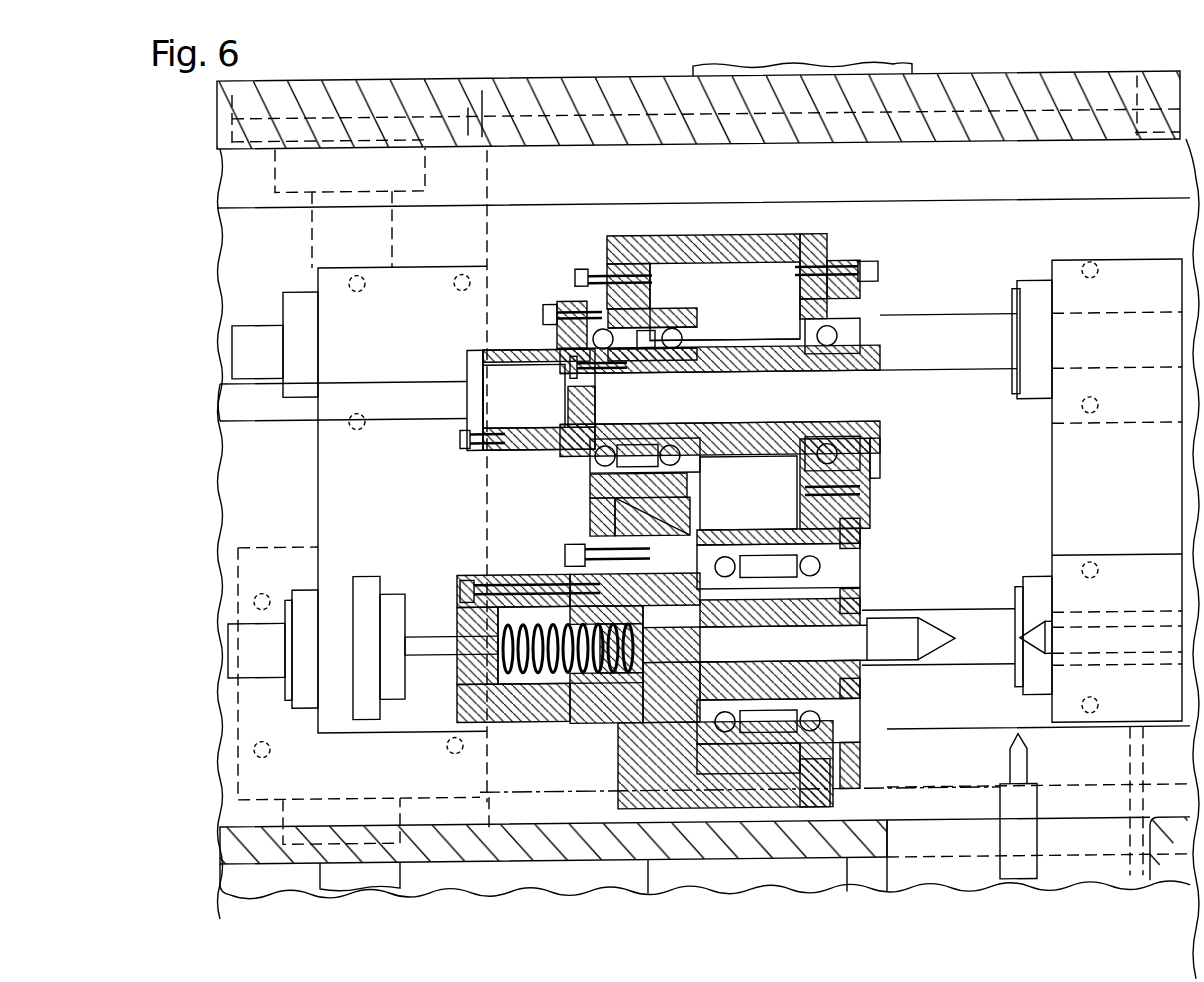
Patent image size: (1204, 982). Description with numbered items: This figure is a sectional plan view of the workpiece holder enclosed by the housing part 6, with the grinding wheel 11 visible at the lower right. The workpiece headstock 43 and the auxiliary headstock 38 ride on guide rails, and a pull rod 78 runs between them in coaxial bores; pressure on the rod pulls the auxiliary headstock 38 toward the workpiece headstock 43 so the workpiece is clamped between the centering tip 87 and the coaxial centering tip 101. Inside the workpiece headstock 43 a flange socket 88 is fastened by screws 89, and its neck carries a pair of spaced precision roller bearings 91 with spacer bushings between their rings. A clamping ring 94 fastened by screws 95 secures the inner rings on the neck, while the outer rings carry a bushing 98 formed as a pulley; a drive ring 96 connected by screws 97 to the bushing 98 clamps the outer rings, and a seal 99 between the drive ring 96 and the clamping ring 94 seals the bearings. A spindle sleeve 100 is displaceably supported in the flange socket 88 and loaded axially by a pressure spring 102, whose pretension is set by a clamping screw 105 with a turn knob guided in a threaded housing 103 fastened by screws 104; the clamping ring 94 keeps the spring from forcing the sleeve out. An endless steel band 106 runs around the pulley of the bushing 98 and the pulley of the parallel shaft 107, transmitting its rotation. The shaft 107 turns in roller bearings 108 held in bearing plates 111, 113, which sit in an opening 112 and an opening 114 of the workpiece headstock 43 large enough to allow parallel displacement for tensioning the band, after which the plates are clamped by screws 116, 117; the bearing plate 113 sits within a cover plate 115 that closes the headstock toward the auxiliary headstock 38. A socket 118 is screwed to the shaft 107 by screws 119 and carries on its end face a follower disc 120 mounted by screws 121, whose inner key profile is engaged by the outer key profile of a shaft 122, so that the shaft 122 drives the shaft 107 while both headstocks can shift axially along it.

The housing part 6 is at (608, 96).
The grinding wheel 11 is at (1035, 790).
The auxiliary headstock 38 is at (1127, 272).
The workpiece headstock 43 is at (770, 240).
The pull rod 78 is at (990, 655).
The centering tip 87 is at (1030, 620).
The flange socket 88 is at (622, 740).
The screws 89 is at (565, 553).
The precision roller bearings 91 is at (740, 680).
The clamping ring 94 is at (860, 692).
The screws 95 is at (860, 595).
The drive ring 96 is at (860, 752).
The screws 97 is at (862, 528).
The bushing 98 is at (775, 532).
The seal 99 is at (852, 565).
The spindle sleeve 100 is at (597, 675).
The centering tip 101 is at (928, 638).
The pressure spring 102 is at (522, 690).
The housing 103 is at (470, 573).
The screws 104 is at (455, 585).
The clamping screw 105 is at (400, 700).
The endless steel band 106 is at (735, 340).
The shaft 107 is at (735, 355).
The roller bearings 108 is at (672, 320).
The bearing plate 111 is at (583, 268).
The opening 112 is at (590, 503).
The bearing plate 113 is at (838, 262).
The opening 114 is at (800, 318).
The cover plate 115 is at (818, 240).
The screws 116 is at (570, 272).
The screws 117 is at (870, 265).
The socket 118 is at (503, 348).
The screws 119 is at (553, 365).
The follower disc 120 is at (468, 372).
The screws 121 is at (465, 440).
The shaft 122 is at (255, 410).